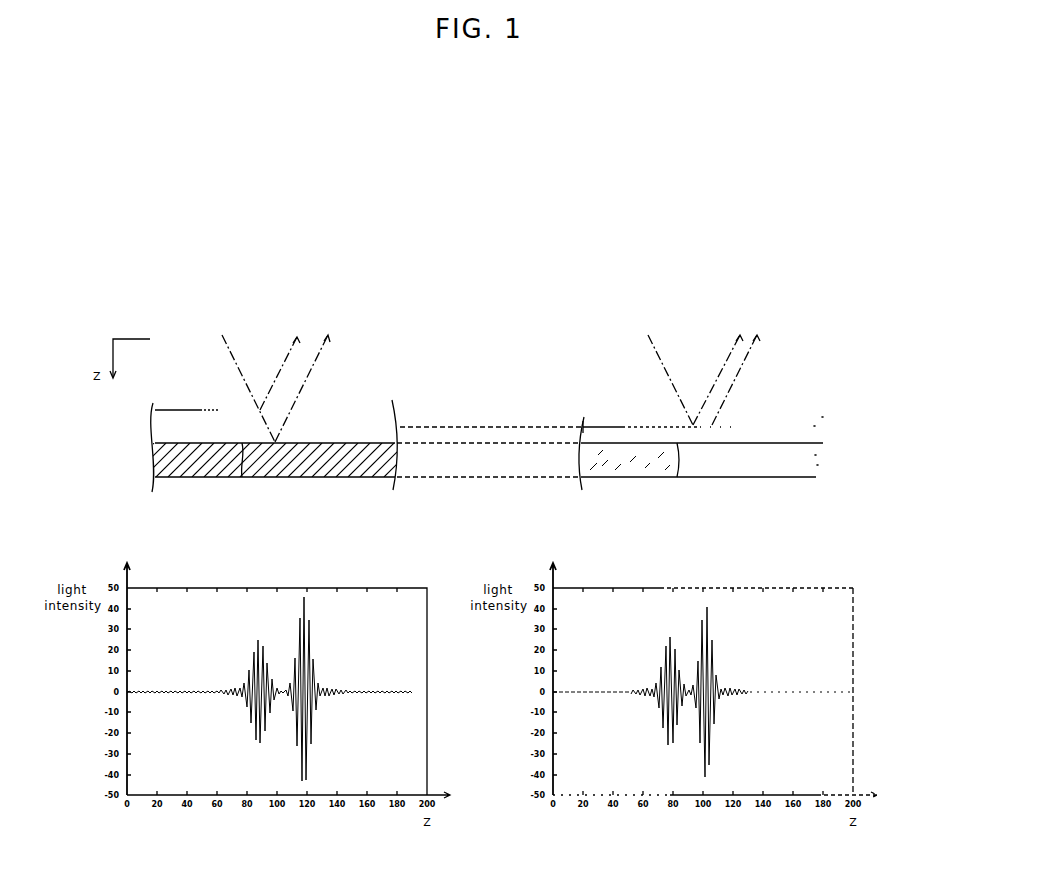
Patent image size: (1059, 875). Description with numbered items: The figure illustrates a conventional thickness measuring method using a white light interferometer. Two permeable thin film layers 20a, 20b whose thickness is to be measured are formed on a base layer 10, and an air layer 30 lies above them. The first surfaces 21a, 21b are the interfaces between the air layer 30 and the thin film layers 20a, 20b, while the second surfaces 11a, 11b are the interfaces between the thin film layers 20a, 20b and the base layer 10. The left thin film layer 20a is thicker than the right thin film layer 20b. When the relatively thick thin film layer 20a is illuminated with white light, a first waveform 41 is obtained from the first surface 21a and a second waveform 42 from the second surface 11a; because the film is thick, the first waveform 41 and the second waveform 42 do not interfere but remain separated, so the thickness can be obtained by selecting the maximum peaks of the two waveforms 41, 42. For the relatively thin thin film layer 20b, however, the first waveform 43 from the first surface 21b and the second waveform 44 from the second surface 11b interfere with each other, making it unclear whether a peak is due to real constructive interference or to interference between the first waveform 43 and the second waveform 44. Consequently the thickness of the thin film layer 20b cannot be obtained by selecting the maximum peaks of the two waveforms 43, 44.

The base layer 10 is at (195, 463).
The second surface 11a is at (242, 477).
The second surface 11b is at (644, 480).
The thin film layer 20a is at (362, 422).
The thin film layer 20b is at (800, 417).
The first surface 21a is at (197, 410).
The first surface 21b is at (625, 425).
The air layer 30 is at (347, 360).
The first waveform 41 is at (248, 630).
The second waveform 42 is at (318, 615).
The first waveform 43 is at (670, 622).
The second waveform 44 is at (713, 617).